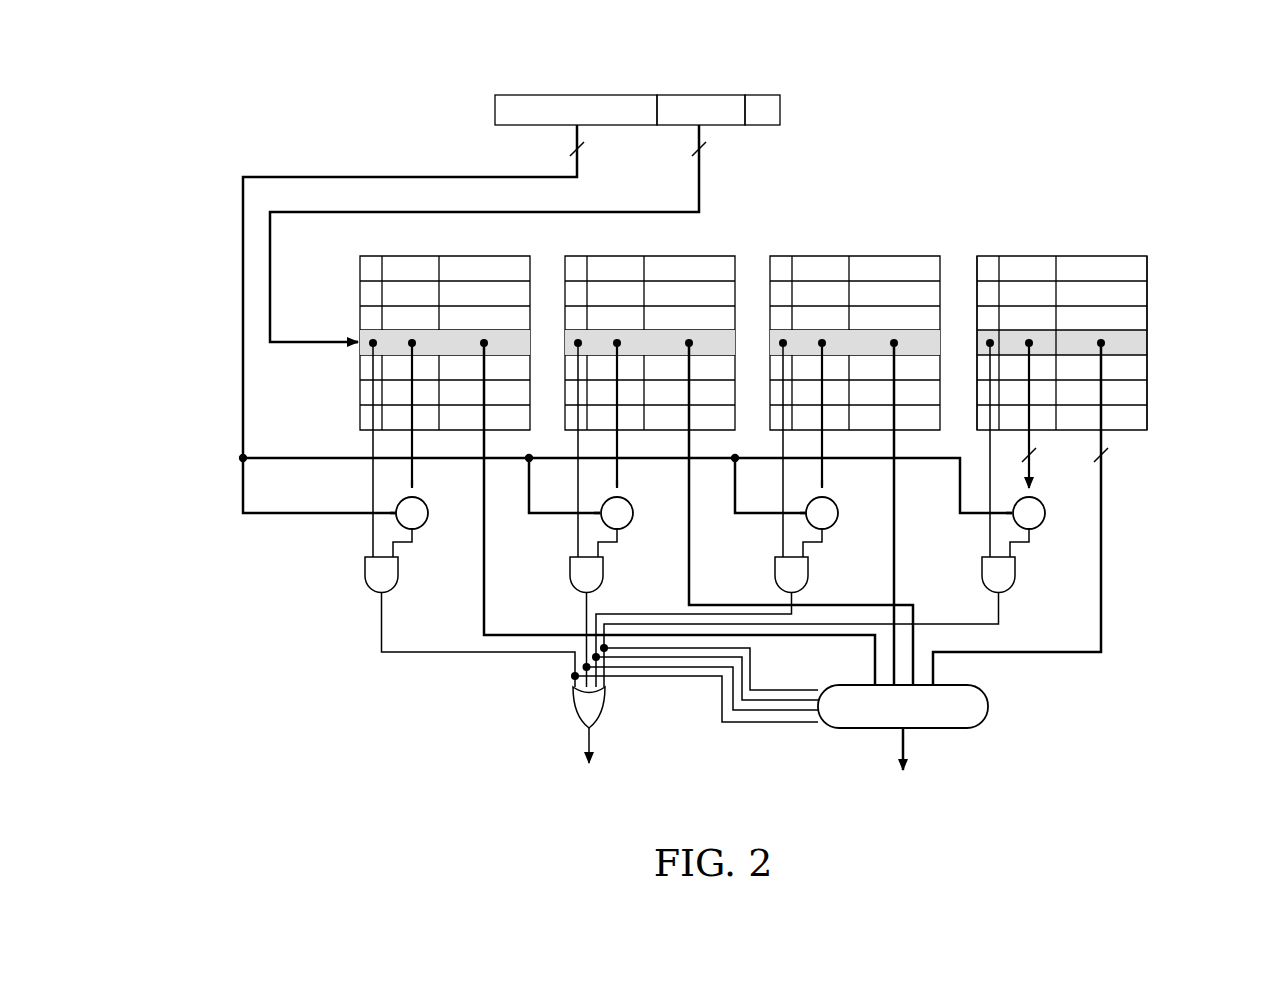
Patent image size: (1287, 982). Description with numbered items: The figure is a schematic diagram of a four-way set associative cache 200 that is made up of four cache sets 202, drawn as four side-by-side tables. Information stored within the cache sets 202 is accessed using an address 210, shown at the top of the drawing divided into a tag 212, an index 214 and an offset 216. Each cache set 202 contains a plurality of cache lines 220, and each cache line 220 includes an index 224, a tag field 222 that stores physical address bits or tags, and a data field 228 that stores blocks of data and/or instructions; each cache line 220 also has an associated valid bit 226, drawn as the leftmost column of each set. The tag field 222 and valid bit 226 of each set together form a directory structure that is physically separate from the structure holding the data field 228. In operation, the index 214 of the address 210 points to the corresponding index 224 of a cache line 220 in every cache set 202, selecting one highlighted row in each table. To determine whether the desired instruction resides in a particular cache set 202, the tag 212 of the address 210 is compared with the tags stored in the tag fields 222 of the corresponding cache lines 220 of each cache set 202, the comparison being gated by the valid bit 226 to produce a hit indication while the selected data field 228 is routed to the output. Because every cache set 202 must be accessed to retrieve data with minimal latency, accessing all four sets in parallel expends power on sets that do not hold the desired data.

The four-way set associative cache 200 is at (175, 100).
The cache set 202 is at (1089, 355).
The address 210 is at (647, 115).
The tag 212 is at (495, 117).
The index 214 is at (720, 132).
The offset 216 is at (778, 117).
The cache line 220 is at (1089, 286).
The tag field 222 is at (1020, 228).
The index 224 is at (292, 258).
The valid bit 226 is at (982, 228).
The data field 228 is at (1100, 228).